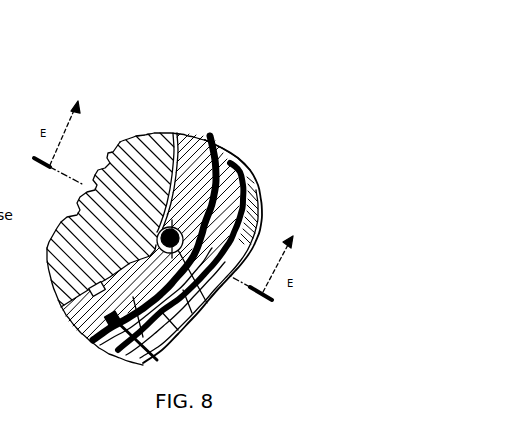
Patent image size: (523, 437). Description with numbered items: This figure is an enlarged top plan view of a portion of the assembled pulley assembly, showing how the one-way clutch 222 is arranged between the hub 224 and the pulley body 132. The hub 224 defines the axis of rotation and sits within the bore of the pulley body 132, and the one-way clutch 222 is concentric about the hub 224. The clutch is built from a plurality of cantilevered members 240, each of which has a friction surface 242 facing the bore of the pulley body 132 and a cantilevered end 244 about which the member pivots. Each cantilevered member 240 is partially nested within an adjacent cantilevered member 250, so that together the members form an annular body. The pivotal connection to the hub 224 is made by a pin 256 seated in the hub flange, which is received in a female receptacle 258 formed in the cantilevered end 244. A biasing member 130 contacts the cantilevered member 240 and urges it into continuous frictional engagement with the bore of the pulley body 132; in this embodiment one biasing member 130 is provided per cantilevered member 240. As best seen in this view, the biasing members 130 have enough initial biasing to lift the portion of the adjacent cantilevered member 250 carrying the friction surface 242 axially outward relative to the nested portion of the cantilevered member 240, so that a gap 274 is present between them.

The biasing member 130 is at (86, 288).
The pulley body 132 is at (178, 330).
The one-way clutch 222 is at (188, 173).
The hub 224 is at (142, 138).
The cantilevered member 240 is at (207, 136).
The friction surface 242 is at (228, 165).
The cantilevered end 244 is at (257, 237).
The adjacent cantilevered member 250 is at (100, 318).
The pin 256 is at (196, 311).
The female receptacle 258 is at (160, 234).
The gap 274 is at (220, 134).